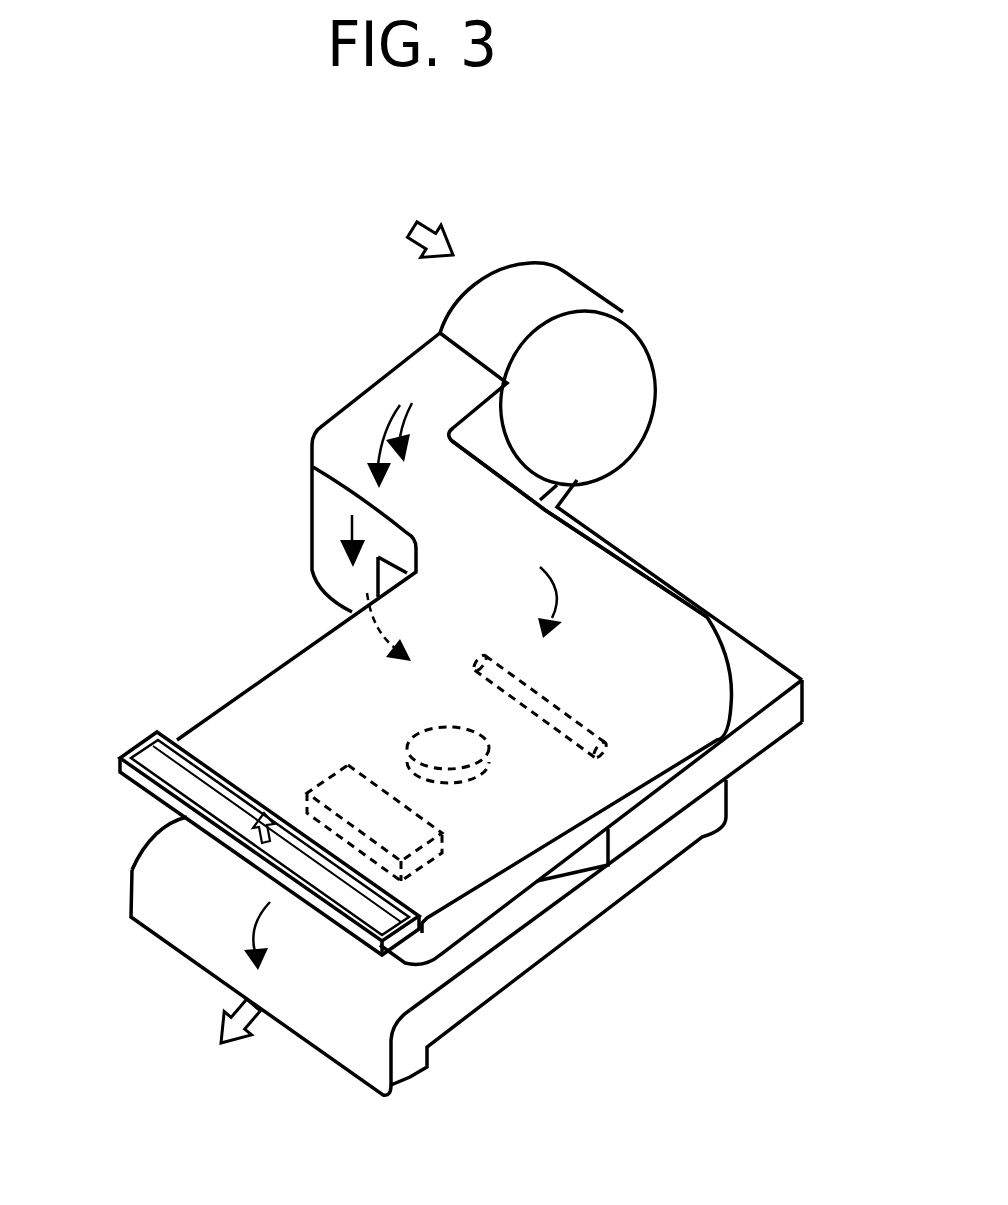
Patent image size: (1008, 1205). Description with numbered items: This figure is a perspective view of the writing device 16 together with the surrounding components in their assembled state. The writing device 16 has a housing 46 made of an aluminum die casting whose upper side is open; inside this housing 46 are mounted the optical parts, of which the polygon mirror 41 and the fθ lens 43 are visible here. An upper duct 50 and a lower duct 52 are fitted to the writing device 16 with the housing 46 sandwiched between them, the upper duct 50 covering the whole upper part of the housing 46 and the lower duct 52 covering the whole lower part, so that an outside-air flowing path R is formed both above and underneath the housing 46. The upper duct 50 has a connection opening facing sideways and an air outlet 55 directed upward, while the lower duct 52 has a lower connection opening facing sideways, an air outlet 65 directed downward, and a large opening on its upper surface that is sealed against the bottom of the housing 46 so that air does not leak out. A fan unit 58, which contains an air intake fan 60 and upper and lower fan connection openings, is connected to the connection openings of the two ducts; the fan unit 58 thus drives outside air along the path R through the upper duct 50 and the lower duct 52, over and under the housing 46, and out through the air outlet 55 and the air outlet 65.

The writing device 16 is at (762, 630).
The polygon mirror 41 is at (445, 745).
The fθ lens 43 is at (498, 655).
The housing 46 is at (748, 743).
The upper duct 50 is at (661, 572).
The lower duct 52 is at (135, 834).
The air outlet 55 is at (177, 777).
The fan unit 58 is at (352, 374).
The air intake fan 60 is at (622, 388).
The air outlet 65 is at (333, 1060).